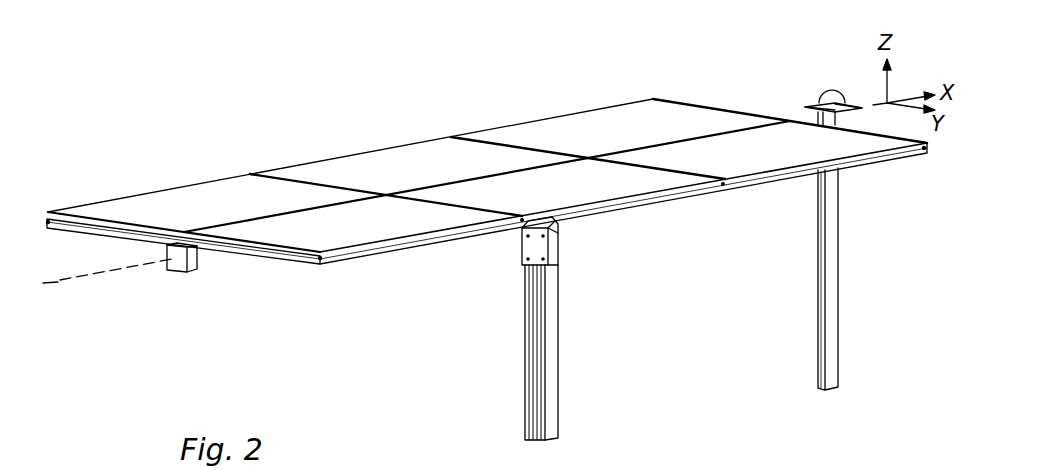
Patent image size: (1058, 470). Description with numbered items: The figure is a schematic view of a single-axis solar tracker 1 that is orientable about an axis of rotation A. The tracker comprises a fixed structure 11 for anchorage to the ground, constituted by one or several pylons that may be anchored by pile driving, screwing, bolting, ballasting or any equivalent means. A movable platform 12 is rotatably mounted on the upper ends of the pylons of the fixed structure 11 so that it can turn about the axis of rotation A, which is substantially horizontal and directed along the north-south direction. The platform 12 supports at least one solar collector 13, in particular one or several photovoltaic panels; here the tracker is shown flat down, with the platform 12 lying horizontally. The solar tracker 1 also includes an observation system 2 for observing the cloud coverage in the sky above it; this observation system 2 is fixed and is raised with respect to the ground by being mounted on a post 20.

The single-axis solar tracker 1 is at (270, 108).
The observation system 2 is at (825, 92).
The fixed structure 11 is at (549, 328).
The movable platform 12 is at (342, 255).
The solar collector 13 is at (183, 200).
The post 20 is at (834, 296).
The axis of rotation A is at (52, 283).